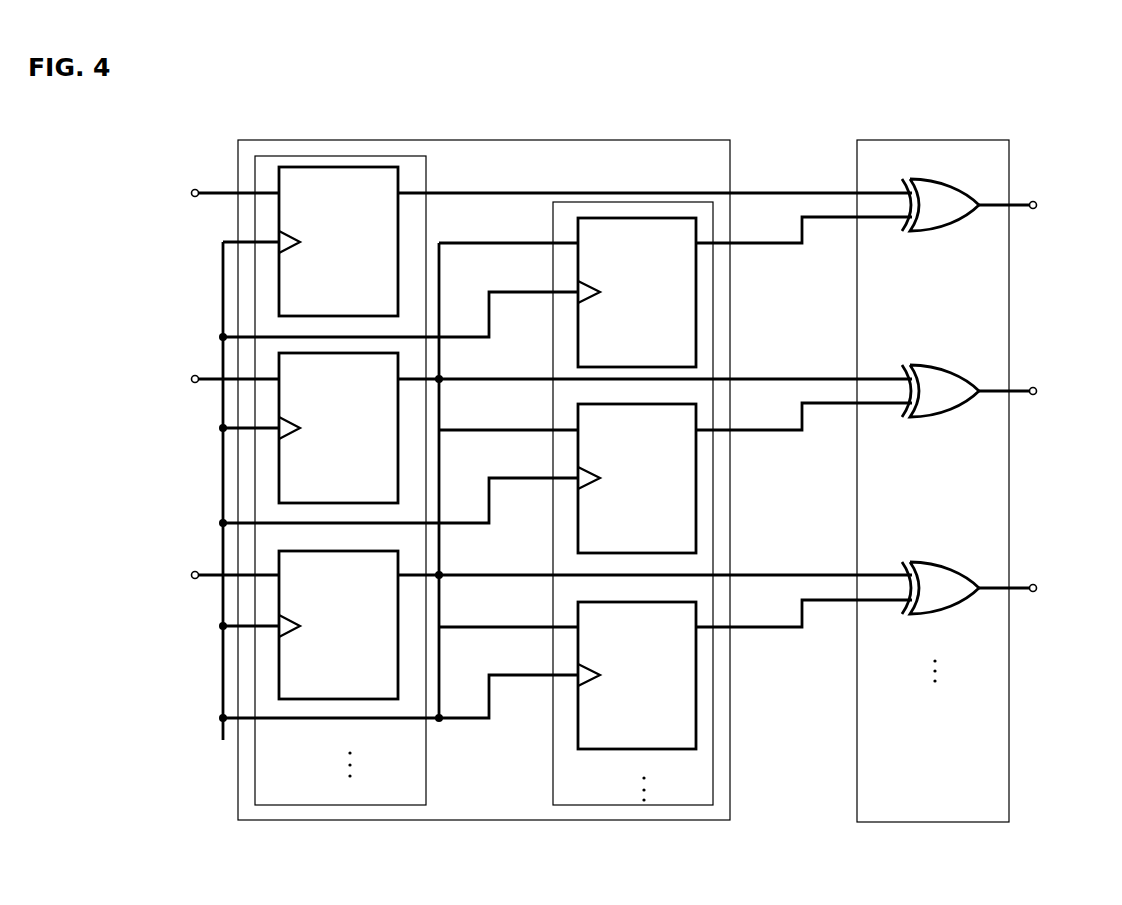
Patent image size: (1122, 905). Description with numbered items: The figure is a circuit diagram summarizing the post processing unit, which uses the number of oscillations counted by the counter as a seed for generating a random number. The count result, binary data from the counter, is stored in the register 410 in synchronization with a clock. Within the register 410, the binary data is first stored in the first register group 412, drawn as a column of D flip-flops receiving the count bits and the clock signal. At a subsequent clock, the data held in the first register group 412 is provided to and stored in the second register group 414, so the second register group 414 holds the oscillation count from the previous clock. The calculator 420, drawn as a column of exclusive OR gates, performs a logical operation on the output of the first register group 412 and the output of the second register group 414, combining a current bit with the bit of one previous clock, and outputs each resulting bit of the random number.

The register 410 is at (495, 806).
The first register group 412 is at (308, 801).
The second register group 414 is at (615, 800).
The calculator 420 is at (948, 807).